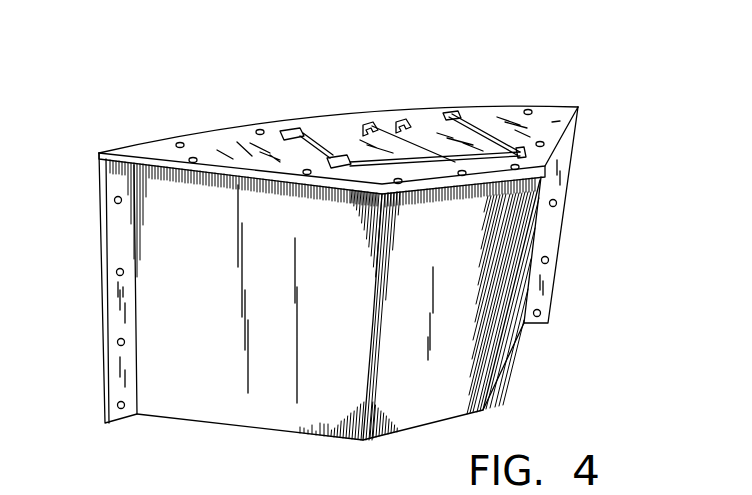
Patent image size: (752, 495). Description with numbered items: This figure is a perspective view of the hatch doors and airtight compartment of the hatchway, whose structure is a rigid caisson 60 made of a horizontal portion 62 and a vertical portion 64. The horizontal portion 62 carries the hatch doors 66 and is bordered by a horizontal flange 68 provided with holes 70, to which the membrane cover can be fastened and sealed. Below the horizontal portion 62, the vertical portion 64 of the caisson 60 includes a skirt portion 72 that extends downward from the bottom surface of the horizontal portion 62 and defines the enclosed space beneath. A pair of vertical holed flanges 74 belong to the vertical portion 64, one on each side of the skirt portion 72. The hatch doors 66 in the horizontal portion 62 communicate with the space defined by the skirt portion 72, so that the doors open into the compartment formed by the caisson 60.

The rigid caisson 60 is at (146, 79).
The horizontal portion 62 is at (488, 117).
The vertical portion 64 is at (620, 110).
The hatch doors 66 is at (333, 130).
The horizontal flange 68 is at (577, 132).
The holes 70 is at (557, 123).
The skirt portion 72 is at (206, 366).
The vertical holed flanges 74 is at (101, 323).